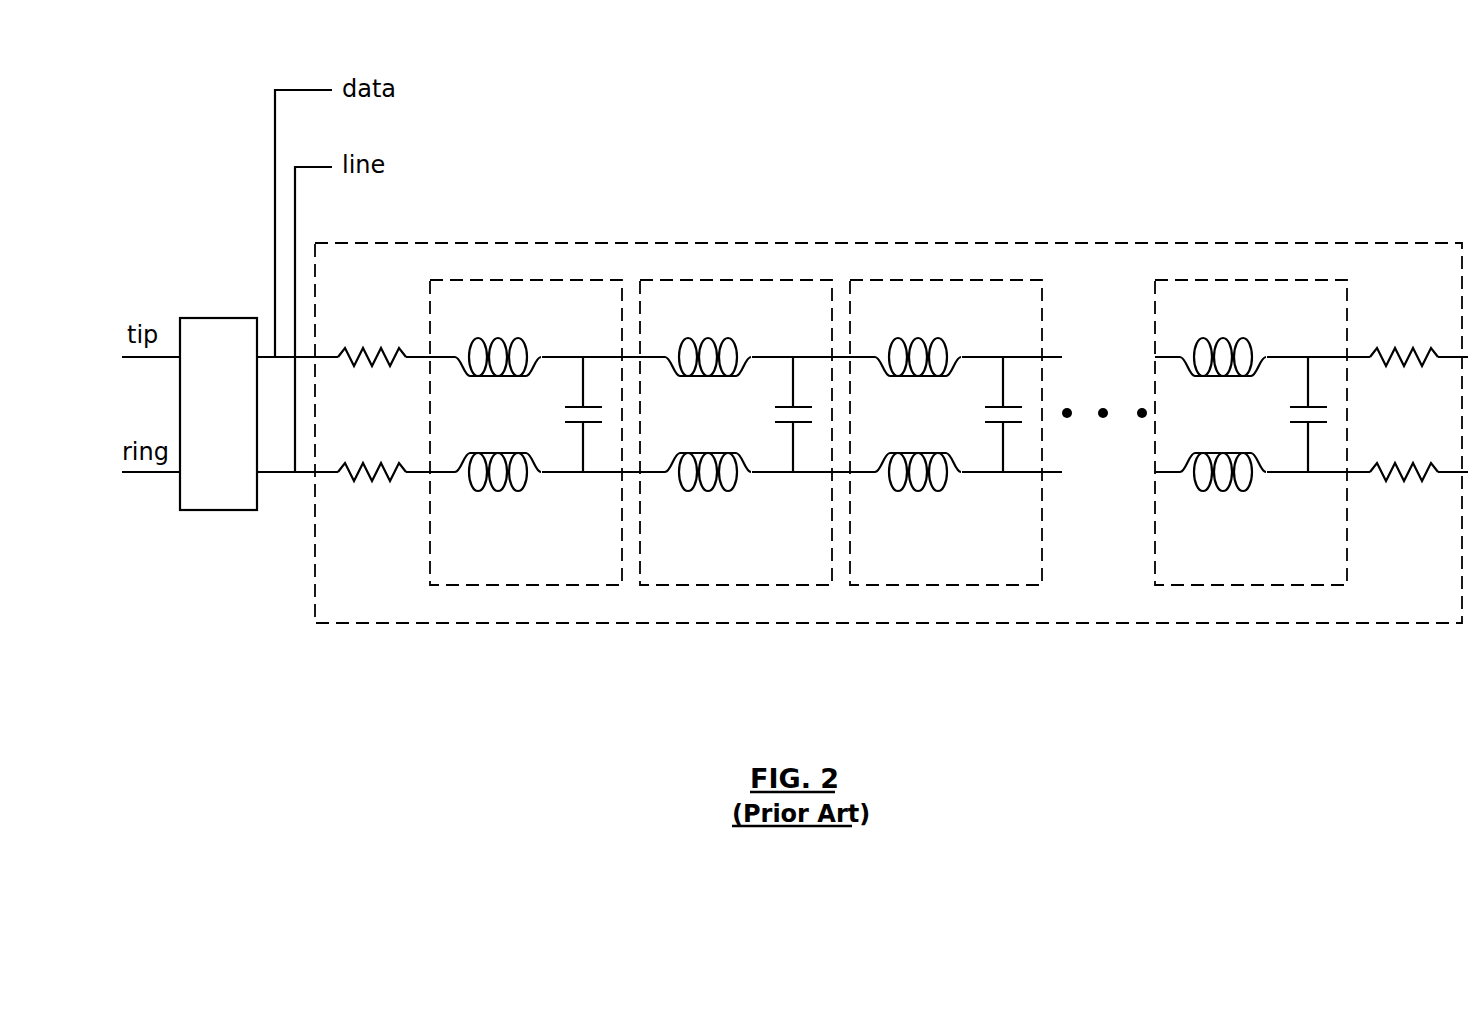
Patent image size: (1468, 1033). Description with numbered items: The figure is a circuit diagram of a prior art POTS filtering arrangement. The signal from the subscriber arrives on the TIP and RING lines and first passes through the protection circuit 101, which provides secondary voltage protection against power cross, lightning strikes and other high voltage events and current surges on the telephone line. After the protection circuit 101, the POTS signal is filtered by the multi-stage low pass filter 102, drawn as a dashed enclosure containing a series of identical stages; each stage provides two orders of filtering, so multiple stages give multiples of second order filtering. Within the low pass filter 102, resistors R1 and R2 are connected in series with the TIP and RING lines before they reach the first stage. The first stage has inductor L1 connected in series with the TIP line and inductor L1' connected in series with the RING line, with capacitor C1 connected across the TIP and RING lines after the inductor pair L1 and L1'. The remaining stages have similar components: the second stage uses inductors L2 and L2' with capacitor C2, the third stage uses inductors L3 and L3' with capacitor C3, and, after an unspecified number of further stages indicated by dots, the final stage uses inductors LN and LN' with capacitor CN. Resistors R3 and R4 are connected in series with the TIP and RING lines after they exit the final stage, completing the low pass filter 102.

The protection circuit 101 is at (218, 414).
The multi-stage low pass filter 102 is at (1040, 243).
The resistor R1 is at (372, 343).
The resistor R2 is at (372, 455).
The resistor R3 is at (1404, 342).
The resistor R4 is at (1404, 455).
The inductor L1 is at (498, 341).
The inductor L1' is at (498, 491).
The capacitor C1 is at (562, 414).
The inductor L2 is at (708, 341).
The inductor L2' is at (708, 491).
The capacitor C2 is at (772, 414).
The inductor L3 is at (918, 341).
The inductor L3' is at (918, 491).
The capacitor C3 is at (982, 414).
The inductor LN is at (1223, 341).
The inductor LN' is at (1223, 491).
The capacitor CN is at (1285, 414).